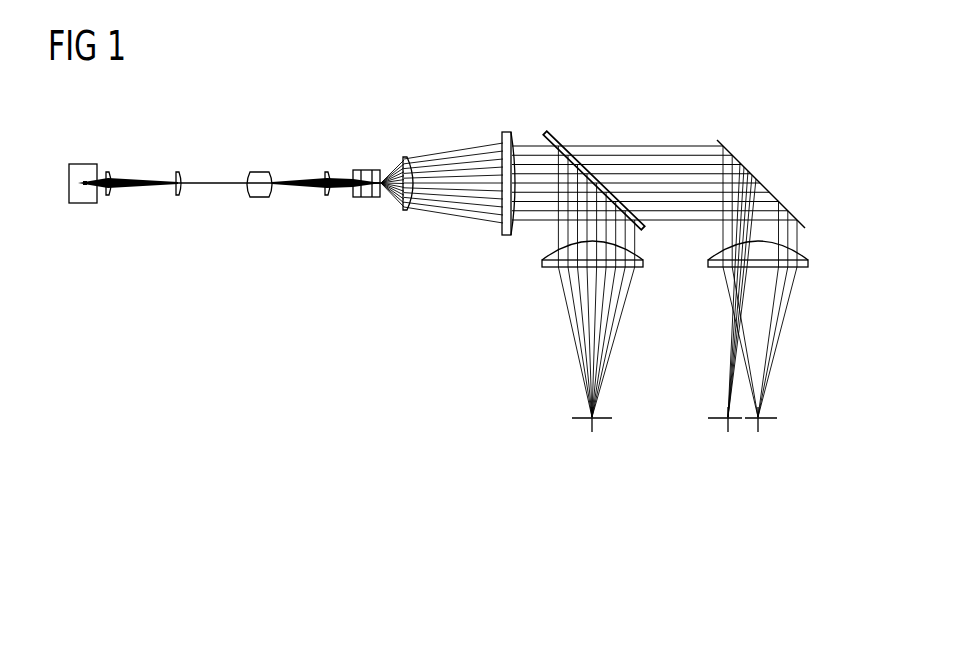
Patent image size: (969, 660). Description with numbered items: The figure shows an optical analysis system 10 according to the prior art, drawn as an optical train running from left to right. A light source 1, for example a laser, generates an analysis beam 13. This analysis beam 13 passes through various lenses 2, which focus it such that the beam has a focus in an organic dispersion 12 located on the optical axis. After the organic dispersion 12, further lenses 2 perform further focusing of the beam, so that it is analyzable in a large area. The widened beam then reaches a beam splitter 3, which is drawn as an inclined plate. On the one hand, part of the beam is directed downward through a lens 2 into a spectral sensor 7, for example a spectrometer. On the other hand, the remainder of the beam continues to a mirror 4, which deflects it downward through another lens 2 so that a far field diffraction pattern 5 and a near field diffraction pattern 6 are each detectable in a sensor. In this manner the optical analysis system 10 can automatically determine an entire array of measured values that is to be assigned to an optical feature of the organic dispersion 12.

The light source 1 is at (77, 160).
The lenses 2 is at (109, 170).
The beam splitter 3 is at (545, 131).
The mirror 4 is at (717, 141).
The far field diffraction pattern 5 is at (769, 431).
The near field diffraction pattern 6 is at (719, 431).
The spectral sensor 7 is at (581, 428).
The optical analysis system 10 is at (269, 402).
The organic dispersion 12 is at (365, 169).
The analysis beam 13 is at (297, 178).